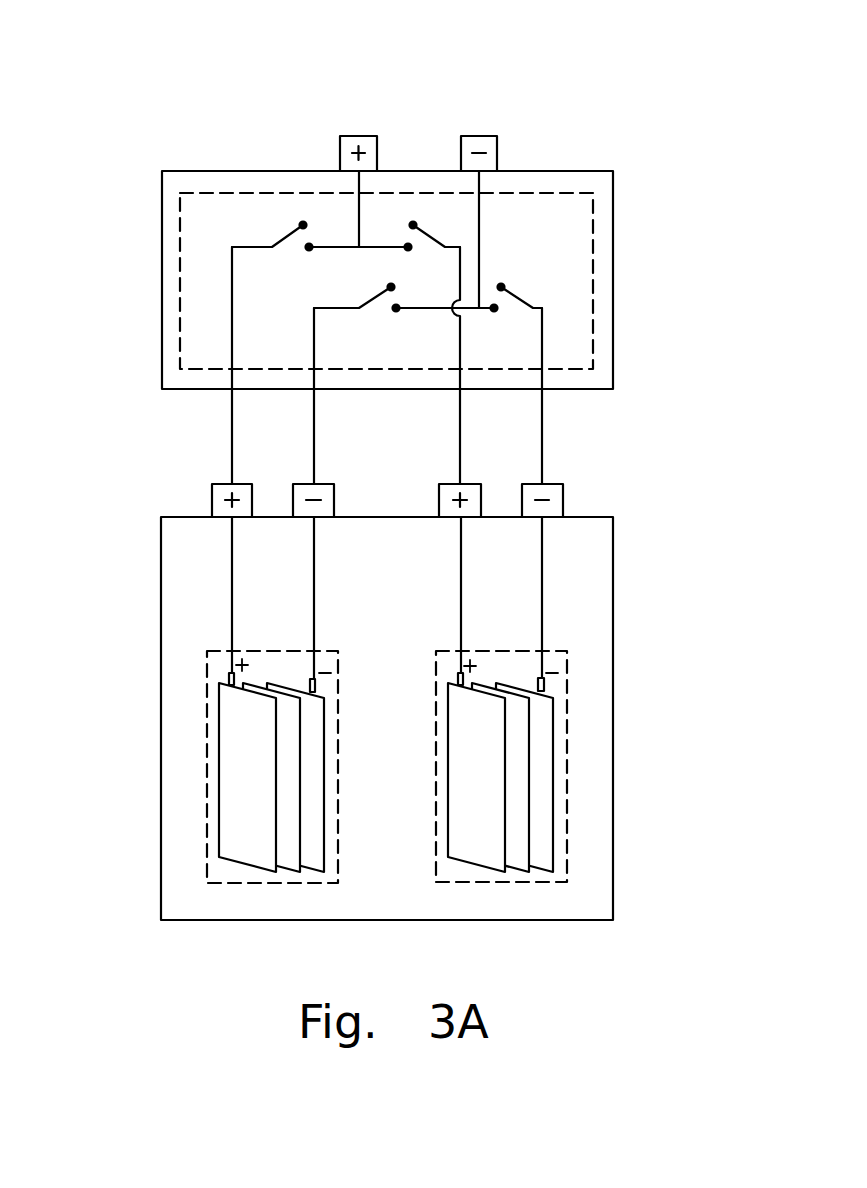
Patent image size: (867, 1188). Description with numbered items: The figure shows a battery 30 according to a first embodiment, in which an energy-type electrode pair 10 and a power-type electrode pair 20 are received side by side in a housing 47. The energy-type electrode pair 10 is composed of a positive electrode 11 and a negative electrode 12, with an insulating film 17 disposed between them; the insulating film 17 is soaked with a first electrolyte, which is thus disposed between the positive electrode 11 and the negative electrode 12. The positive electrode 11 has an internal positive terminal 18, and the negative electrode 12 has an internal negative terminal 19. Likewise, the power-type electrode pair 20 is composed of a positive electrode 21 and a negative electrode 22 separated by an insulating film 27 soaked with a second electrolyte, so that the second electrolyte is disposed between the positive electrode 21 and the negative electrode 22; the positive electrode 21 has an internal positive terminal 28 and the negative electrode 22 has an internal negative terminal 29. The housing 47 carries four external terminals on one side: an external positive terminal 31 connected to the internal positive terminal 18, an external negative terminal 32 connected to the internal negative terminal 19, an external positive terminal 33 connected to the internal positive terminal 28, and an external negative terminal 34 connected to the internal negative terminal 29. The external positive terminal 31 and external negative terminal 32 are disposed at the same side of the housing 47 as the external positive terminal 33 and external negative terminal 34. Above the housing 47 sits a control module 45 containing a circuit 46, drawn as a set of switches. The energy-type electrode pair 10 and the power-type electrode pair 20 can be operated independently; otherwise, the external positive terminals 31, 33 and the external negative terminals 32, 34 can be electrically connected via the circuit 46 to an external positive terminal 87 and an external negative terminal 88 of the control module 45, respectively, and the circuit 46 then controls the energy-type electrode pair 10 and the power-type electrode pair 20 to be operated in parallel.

The energy-type electrode pair 10 is at (207, 715).
The positive electrode 11 is at (219, 806).
The negative electrode 12 is at (325, 810).
The insulating film 17 is at (253, 680).
The internal positive terminal 18 is at (229, 677).
The internal negative terminal 19 is at (316, 689).
The power-type electrode pair 20 is at (567, 838).
The positive electrode 21 is at (437, 745).
The negative electrode 22 is at (553, 752).
The insulating film 27 is at (483, 685).
The internal positive terminal 28 is at (458, 677).
The internal negative terminal 29 is at (545, 685).
The battery 30 is at (50, 490).
The external positive terminal 31 is at (222, 484).
The external negative terminal 32 is at (318, 484).
The external positive terminal 33 is at (468, 484).
The external negative terminal 34 is at (550, 484).
The control module 45 is at (612, 236).
The circuit 46 is at (593, 298).
The housing 47 is at (613, 668).
The external positive terminal 87 is at (351, 136).
The external negative terminal 88 is at (479, 136).